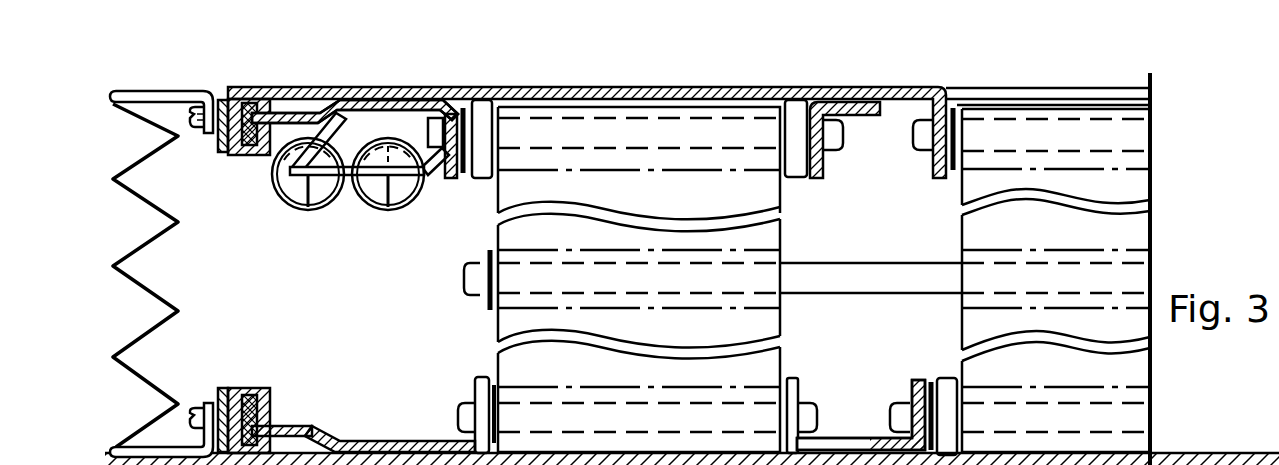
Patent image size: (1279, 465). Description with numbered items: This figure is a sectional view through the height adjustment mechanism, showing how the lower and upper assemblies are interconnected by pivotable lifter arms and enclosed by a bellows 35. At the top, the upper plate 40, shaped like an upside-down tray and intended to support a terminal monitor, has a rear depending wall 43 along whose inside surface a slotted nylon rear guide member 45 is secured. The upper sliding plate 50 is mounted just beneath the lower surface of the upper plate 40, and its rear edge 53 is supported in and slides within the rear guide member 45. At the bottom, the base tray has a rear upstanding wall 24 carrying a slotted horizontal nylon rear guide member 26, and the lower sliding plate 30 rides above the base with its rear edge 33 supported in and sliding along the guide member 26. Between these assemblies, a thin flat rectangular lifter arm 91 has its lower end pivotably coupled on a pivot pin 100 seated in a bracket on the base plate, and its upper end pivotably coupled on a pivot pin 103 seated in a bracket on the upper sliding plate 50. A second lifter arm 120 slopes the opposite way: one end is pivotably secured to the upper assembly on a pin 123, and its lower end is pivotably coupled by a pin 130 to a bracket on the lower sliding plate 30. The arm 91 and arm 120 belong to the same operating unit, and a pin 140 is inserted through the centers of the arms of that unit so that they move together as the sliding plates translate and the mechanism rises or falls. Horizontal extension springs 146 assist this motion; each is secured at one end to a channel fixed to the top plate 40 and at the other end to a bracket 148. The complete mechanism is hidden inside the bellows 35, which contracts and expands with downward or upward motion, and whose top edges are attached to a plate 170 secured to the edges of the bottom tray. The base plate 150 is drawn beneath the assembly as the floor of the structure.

The plate 170 is at (187, 92).
The upper plate 40 is at (298, 89).
The upper sliding plate 50 is at (393, 97).
The brackets 148 is at (462, 84).
The rear depending wall 43 is at (221, 134).
The rear guide member 45 is at (237, 155).
The rear edge 53 is at (275, 126).
The horizontal extension springs 146 is at (318, 210).
The bellows 35 is at (135, 285).
The rear upstanding wall 24 is at (224, 388).
The rear edge 33 is at (262, 382).
The rear guide member 26 is at (270, 420).
The lower sliding plate 30 is at (310, 427).
The lifter arm 91 is at (503, 328).
The pin 140 is at (462, 287).
The pivot pins 100 is at (812, 400).
The pins 130 is at (892, 417).
The pivot pins 103 is at (840, 152).
The pins 123 is at (920, 142).
The lifter arm 120 is at (970, 322).
The base plate 150 is at (692, 458).